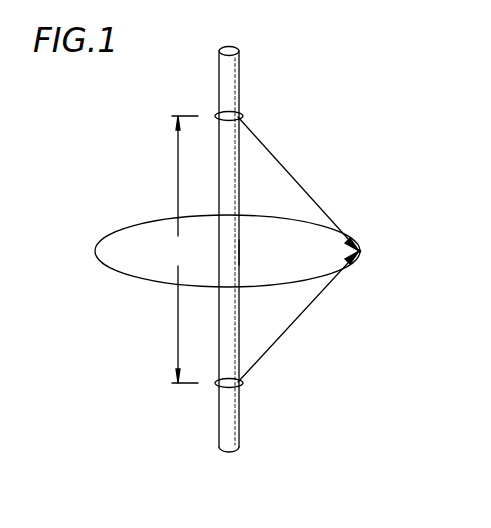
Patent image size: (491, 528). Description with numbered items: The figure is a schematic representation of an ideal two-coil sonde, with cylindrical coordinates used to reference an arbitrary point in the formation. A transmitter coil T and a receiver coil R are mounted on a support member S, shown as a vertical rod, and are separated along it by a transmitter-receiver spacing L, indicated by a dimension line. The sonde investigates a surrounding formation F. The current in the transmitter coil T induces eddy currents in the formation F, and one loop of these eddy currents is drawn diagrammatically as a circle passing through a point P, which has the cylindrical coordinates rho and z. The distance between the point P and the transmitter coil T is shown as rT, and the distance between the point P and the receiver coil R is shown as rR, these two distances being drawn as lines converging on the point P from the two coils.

The transmitter coil T is at (243, 116).
The receiver coil R is at (243, 383).
The formation F is at (105, 236).
The support member S is at (239, 253).
The transmitter-receiver spacing L is at (185, 249).
The point P is at (360, 250).
The distance between point P and transmitter rT is at (296, 178).
The distance between point P and receiver rR is at (296, 318).